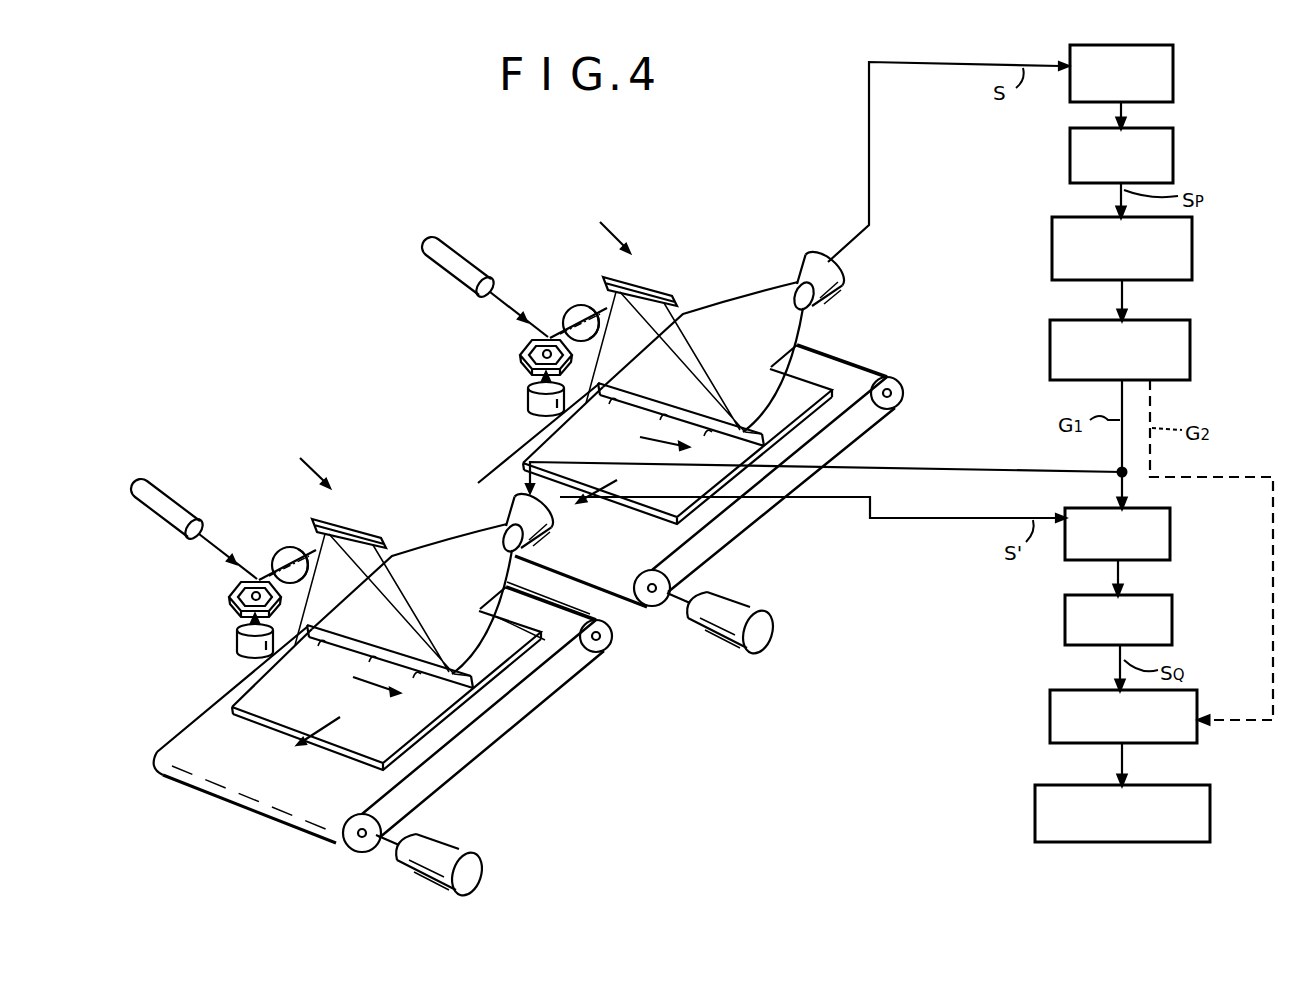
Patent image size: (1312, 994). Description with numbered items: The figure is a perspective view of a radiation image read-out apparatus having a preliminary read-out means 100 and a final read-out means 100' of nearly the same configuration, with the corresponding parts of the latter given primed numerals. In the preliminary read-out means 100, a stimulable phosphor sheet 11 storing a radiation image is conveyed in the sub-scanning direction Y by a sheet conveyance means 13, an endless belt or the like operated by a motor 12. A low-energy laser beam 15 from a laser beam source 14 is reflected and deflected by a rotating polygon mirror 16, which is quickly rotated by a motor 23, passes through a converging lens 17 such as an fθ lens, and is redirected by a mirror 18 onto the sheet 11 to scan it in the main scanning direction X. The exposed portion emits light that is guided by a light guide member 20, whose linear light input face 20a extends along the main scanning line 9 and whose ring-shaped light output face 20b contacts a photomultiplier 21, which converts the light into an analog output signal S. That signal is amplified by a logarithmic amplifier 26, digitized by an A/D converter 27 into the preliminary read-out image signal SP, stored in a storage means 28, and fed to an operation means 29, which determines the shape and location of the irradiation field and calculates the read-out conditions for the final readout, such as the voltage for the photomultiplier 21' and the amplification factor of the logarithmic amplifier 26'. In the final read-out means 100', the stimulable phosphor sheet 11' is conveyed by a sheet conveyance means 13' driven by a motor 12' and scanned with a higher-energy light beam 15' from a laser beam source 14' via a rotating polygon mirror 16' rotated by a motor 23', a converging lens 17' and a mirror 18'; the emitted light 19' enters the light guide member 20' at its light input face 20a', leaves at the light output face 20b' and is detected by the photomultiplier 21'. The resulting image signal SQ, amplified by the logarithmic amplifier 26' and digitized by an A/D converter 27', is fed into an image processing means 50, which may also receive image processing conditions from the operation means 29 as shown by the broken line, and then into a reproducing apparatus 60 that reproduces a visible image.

The scanning line 9 is at (617, 414).
The stimulable phosphor sheet 11 is at (677, 459).
The motor 12 is at (735, 611).
The sheet conveyance means 13 is at (690, 492).
The laser beam source 14 is at (465, 263).
The laser beam 15 is at (519, 301).
The rotating polygon mirror 16 is at (518, 355).
The converging lens 17 is at (578, 297).
The mirror 18 is at (665, 341).
The light guide member 20 is at (703, 343).
The linear light input face 20a is at (808, 467).
The ring-shaped light output face 20b is at (833, 313).
The photomultiplier 21 is at (808, 255).
The motor 23 is at (515, 396).
The logarithmic amplifier 26 is at (1164, 73).
The A/D converter 27 is at (1166, 155).
The storage means 28 is at (1193, 245).
The operation means 29 is at (1191, 350).
The image processing means 50 is at (1195, 744).
The reproducing apparatus 60 is at (1212, 820).
The preliminary read-out means 100 is at (745, 359).
The stimulable phosphor sheet 11' is at (387, 701).
The motor 12' is at (448, 857).
The sheet conveyance means 13' is at (383, 719).
The laser beam source 14' is at (183, 504).
The light beam 15' is at (232, 539).
The rotating polygon mirror 16' is at (222, 592).
The converging lens 17' is at (287, 529).
The mirror 18' is at (374, 580).
The emitted light 19' is at (378, 665).
The light guide member 20' is at (412, 576).
The linear light input face 20a' is at (520, 714).
The ring-shaped light output face 20b' is at (566, 541).
The photomultiplier 21' is at (505, 492).
The motor 23' is at (221, 640).
The logarithmic amplifier 26' is at (1159, 534).
The A/D converter 27' is at (1159, 620).
The final read-out means 100' is at (626, 662).